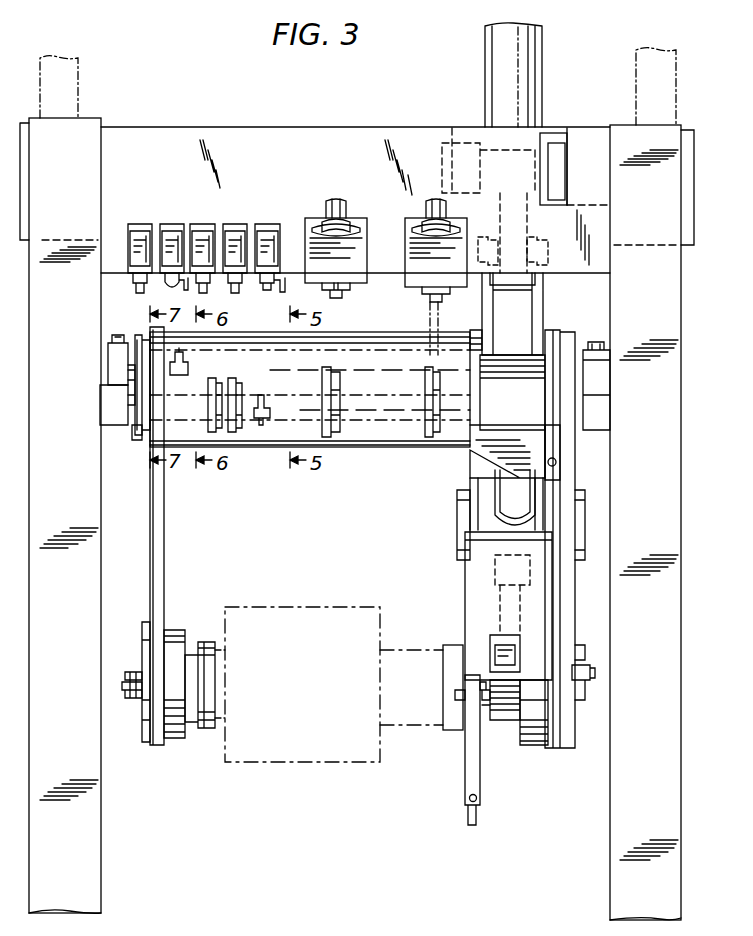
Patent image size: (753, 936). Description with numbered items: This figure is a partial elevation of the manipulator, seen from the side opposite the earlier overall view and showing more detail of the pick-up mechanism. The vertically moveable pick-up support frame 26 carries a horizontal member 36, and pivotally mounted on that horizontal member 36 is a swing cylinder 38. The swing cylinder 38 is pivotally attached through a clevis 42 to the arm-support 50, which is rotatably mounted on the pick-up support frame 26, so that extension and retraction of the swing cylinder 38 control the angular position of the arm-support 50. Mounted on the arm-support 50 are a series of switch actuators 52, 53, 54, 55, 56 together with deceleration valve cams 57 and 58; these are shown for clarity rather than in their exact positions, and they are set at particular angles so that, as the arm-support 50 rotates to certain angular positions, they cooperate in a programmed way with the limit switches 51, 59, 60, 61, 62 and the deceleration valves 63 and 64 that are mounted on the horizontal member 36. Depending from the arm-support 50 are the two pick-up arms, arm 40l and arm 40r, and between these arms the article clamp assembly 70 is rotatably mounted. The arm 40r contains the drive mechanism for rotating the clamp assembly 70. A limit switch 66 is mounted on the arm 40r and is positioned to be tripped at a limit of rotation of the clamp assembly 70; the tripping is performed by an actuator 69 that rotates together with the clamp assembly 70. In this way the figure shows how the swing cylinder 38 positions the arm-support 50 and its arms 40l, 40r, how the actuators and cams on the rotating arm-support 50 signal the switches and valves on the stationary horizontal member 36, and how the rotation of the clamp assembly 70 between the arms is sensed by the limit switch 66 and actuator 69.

The pick-up support frame 26 is at (681, 522).
The horizontal member 36 is at (126, 132).
The swing cylinder 38 is at (542, 68).
The clevis 42 is at (518, 238).
The limit switch 51 is at (140, 224).
The limit switch 59 is at (173, 224).
The limit switch 60 is at (204, 224).
The limit switch 61 is at (236, 224).
The limit switch 62 is at (270, 224).
The deceleration valve 63 is at (312, 218).
The deceleration valve 64 is at (406, 222).
The arm-support 50 is at (395, 447).
The switch actuator 52 is at (138, 415).
The switch actuator 53 is at (180, 375).
The switch actuator 54 is at (211, 378).
The switch actuator 55 is at (233, 378).
The switch actuator 56 is at (262, 395).
The deceleration valve cam 57 is at (331, 375).
The deceleration valve cam 58 is at (425, 381).
The arm 40l is at (164, 538).
The arm 40r is at (560, 576).
The limit switch 66 is at (480, 648).
The actuator 69 is at (478, 820).
The clamp assembly 70 is at (244, 764).